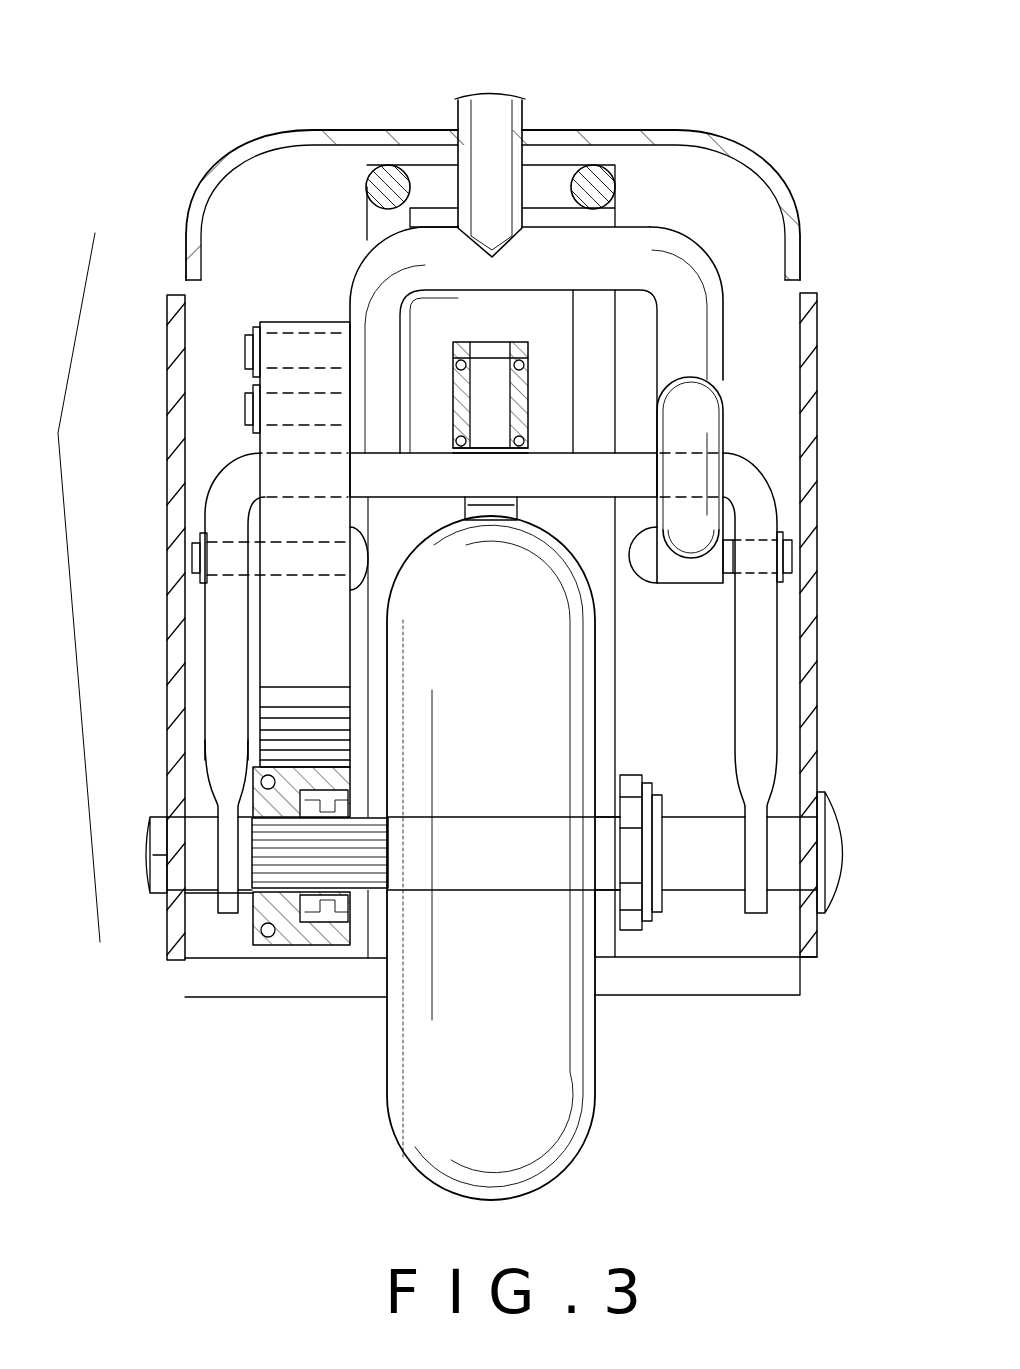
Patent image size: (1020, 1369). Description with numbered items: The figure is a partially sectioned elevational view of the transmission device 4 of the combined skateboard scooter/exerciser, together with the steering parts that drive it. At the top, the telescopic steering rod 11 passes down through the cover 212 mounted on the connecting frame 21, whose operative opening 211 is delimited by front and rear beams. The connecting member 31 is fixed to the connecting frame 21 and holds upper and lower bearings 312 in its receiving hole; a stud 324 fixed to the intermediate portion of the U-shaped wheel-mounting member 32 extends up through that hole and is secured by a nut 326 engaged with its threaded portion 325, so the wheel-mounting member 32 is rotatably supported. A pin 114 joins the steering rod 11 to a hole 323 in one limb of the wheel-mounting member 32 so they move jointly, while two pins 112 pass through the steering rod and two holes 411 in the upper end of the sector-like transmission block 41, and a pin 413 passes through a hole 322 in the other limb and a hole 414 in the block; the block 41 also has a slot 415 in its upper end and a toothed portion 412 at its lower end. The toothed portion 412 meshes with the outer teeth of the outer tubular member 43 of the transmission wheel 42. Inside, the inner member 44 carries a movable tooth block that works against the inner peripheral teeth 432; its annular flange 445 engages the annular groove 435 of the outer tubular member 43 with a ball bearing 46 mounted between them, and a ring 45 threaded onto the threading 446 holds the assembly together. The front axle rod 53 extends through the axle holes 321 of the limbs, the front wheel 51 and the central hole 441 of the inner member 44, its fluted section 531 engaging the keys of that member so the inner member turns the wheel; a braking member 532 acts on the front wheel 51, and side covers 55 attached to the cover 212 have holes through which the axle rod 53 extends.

The transmission device 4 is at (69, 587).
The telescopic steering rod 11 is at (502, 120).
The connecting frame 21 is at (380, 178).
The operative opening 211 is at (425, 187).
The cover 212 is at (733, 160).
The connecting member 31 is at (515, 410).
The upper and lower bearings 312 is at (522, 393).
The wheel-mounting member 32 is at (753, 630).
The axle holes 321 is at (753, 817).
The hole 322 is at (232, 540).
The hole 323 is at (782, 530).
The stud 324 is at (495, 418).
The threaded portion 325 is at (507, 342).
The nut 326 is at (513, 343).
The transmission block 41 is at (295, 648).
The holes 411 is at (303, 333).
The toothed portion 412 is at (287, 725).
The pin 413 is at (195, 562).
The hole 414 is at (307, 575).
The slot 415 is at (297, 448).
The transmission wheel 42 is at (277, 940).
The outer tubular member 43 is at (307, 940).
The inner peripheral teeth 432 is at (297, 786).
The annular groove 435 is at (253, 780).
The inner member 44 is at (258, 912).
The central hole 441 is at (325, 908).
The annular flange 445 is at (345, 905).
The threading 446 is at (333, 940).
The ring 45 is at (340, 940).
The ball bearing 46 is at (260, 940).
The front wheel 51 is at (570, 1070).
The front axle rod 53 is at (710, 858).
The fluted section 531 is at (373, 860).
The braking member 532 is at (633, 900).
The side covers 55 is at (812, 398).
The pins 112 is at (247, 347).
The pin 114 is at (728, 553).